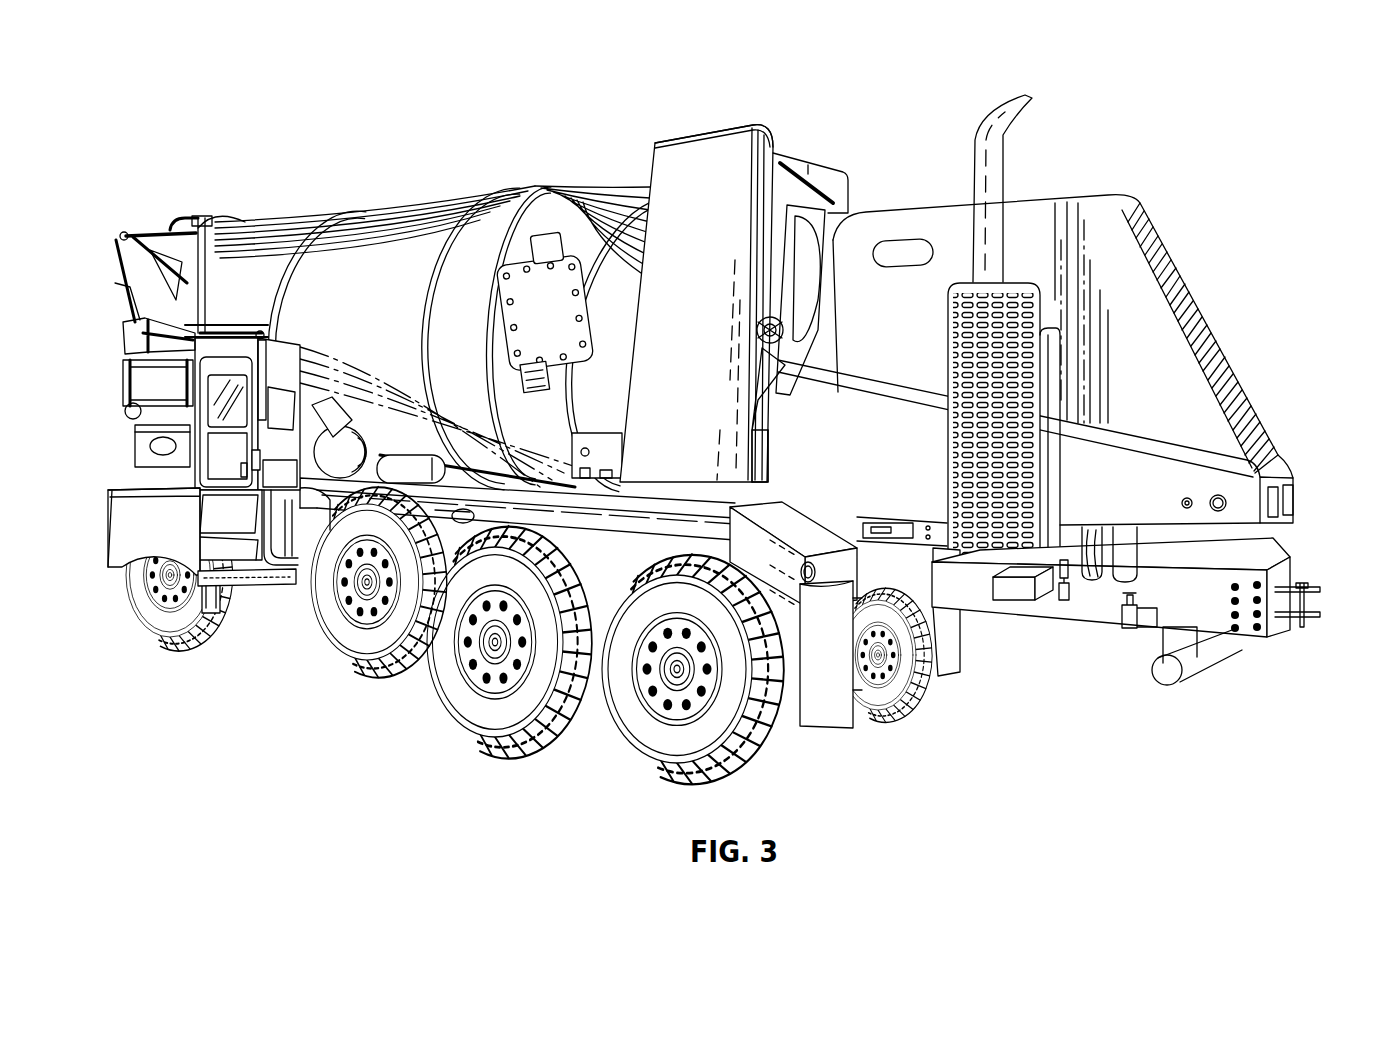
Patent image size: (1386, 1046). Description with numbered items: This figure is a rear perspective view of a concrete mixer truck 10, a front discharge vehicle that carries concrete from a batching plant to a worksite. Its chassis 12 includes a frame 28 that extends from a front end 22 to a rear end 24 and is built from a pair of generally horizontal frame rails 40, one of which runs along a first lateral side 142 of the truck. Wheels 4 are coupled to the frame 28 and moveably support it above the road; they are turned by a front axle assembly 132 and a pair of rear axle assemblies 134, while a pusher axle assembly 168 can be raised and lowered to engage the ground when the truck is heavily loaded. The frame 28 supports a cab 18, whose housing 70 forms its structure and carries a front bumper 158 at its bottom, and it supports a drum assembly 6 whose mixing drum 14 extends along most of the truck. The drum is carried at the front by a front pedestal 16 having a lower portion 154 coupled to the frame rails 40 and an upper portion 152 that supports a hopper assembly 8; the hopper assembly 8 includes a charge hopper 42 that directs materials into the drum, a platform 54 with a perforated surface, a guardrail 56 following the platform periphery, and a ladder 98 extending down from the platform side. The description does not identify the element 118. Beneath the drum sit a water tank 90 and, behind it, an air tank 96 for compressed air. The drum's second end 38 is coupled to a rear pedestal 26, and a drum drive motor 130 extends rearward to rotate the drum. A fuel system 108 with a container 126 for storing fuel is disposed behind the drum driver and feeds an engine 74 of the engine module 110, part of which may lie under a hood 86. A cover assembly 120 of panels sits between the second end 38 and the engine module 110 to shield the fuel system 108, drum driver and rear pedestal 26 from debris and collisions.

The concrete mixer truck 10 is at (556, 92).
The drum assembly 6 is at (439, 315).
The mixing drum 14 is at (440, 207).
The hopper assembly 8 is at (149, 301).
The charge hopper 42 is at (225, 222).
The guardrail 56 is at (120, 232).
The lower portion 154 is at (175, 255).
The front pedestal 16 is at (118, 285).
The platform 54 is at (118, 328).
The cab 18 is at (135, 342).
The ladder 98 is at (178, 380).
The chute pivot 118 is at (125, 408).
The housing 70 is at (215, 340).
The upper portion 152 is at (272, 345).
The water tank 90 is at (352, 405).
The second end 38 is at (622, 165).
The cover assembly 120 is at (718, 143).
The fuel system 108 is at (815, 152).
The drum drive motor 130 is at (763, 330).
The container 126 is at (760, 372).
The hood 86 is at (1102, 207).
The engine module 110 is at (1061, 332).
The engine 74 is at (1300, 530).
The frame 28 is at (585, 522).
The rear pedestal 26 is at (812, 580).
The rear axle assemblies 134 is at (882, 693).
The frame rails 40 is at (988, 600).
The first lateral side 142 is at (1086, 608).
The rear end 24 is at (1322, 598).
The wheels 4 is at (140, 622).
The chassis 12 is at (379, 607).
The pusher axle assembly 168 is at (370, 665).
The air tank 96 is at (400, 520).
The front end 22 is at (161, 568).
The front bumper 158 is at (115, 505).
The front axle assembly 132 is at (215, 634).